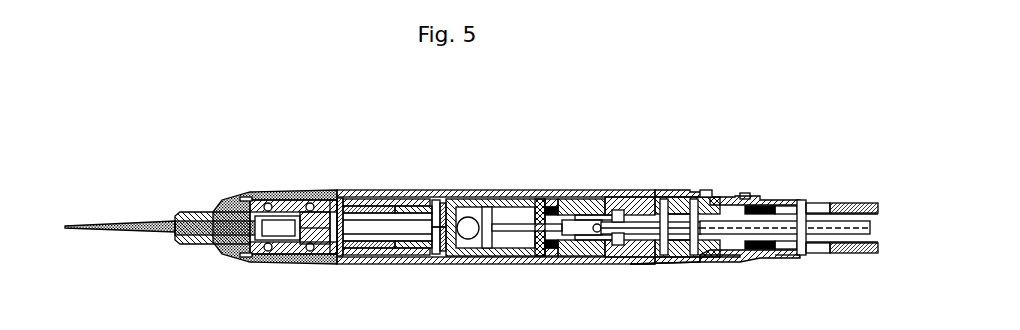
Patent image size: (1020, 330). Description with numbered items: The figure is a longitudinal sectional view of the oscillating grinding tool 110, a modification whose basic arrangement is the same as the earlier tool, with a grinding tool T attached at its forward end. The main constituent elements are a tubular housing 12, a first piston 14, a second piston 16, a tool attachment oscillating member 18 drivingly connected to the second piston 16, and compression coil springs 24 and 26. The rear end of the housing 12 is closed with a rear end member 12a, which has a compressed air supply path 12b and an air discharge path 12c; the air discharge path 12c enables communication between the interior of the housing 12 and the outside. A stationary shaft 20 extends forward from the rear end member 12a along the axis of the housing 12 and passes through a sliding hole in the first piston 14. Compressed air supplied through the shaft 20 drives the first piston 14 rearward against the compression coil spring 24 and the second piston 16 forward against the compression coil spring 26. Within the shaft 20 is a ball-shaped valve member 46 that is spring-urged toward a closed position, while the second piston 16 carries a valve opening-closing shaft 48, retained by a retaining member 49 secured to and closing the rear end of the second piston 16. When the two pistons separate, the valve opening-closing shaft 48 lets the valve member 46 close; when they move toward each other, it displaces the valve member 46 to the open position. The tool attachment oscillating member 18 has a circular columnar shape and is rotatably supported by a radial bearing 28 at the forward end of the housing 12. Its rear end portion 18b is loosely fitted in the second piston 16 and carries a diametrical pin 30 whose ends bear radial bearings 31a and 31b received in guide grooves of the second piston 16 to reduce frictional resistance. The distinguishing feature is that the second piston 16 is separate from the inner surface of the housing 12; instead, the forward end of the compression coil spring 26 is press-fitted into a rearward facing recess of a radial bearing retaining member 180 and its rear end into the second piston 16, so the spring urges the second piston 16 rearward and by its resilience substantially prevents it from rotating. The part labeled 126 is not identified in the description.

The oscillating grinding tool 110 is at (512, 135).
The tubular housing 12 is at (465, 191).
The rear end member 12a is at (722, 198).
The compressed air supply path 12b is at (768, 203).
The air discharge path 12c is at (685, 258).
The radial bearing retaining member 180 is at (288, 195).
The radial bearing 28 is at (292, 264).
The tool T is at (112, 222).
The radial bearing 31a is at (428, 205).
The radial bearing 31b is at (421, 258).
The compression coil spring 26 is at (380, 205).
The tool attachment oscillating member 18 is at (355, 210).
The rear end portion 18b is at (373, 258).
The second piston 16 is at (400, 205).
The pin 30 is at (450, 262).
The retaining member 49 is at (507, 258).
The valve opening-closing shaft 48 is at (536, 258).
The first piston 14 is at (545, 205).
The ball-shaped valve member 46 is at (558, 260).
The compression coil spring 24 is at (591, 195).
The stationary shaft 20 is at (620, 193).
The coupling 126 is at (652, 196).